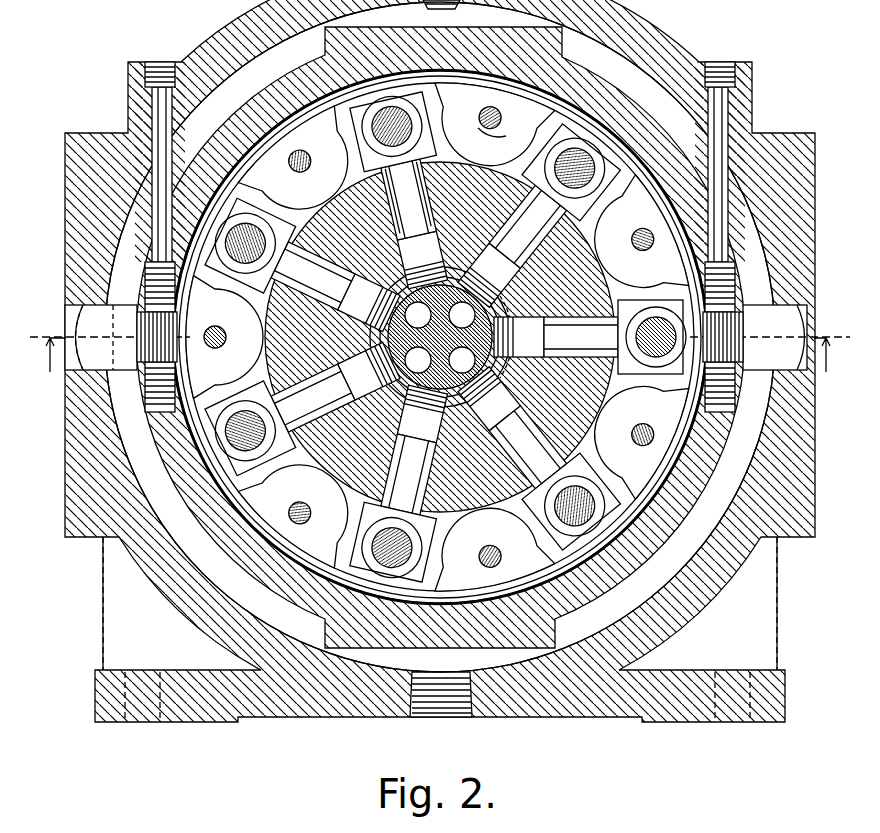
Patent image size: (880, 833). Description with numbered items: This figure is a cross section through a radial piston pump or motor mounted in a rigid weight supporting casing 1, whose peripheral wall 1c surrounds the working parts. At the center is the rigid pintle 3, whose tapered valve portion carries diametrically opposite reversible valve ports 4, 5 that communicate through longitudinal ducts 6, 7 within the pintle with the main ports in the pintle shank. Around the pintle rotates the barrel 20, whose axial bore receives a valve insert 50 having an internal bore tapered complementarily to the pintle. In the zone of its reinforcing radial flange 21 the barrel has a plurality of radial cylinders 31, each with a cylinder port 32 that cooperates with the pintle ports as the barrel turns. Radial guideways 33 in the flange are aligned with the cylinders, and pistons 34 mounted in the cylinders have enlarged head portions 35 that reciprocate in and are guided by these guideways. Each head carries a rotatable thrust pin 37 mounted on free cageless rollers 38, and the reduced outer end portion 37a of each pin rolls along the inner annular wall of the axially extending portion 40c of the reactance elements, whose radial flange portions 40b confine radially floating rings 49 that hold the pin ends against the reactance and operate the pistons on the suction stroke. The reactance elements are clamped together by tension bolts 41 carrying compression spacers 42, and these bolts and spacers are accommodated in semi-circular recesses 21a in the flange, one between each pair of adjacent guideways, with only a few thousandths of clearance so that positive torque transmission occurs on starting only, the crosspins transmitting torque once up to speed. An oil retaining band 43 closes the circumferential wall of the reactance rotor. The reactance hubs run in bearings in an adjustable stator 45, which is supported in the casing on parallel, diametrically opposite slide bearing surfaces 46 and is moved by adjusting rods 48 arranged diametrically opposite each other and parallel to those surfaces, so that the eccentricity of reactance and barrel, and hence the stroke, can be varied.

The peripheral wall 1c is at (648, 22).
The casing 1 is at (435, 360).
The pintle 3 is at (386, 318).
The reversible valve port 4 is at (378, 290).
The reversible valve port 5 is at (436, 392).
The longitudinal duct 6 is at (440, 315).
The longitudinal duct 7 is at (440, 360).
The barrel 20 is at (568, 272).
The reinforcing radial flange 21 is at (618, 284).
The semi-circular recess 21a is at (326, 492).
The radial cylinder 31 is at (441, 337).
The cylinder port 32 is at (499, 353).
The radial guideway 33 is at (432, 166).
The piston 34 is at (396, 210).
The enlarged head portion 35 is at (416, 160).
The thrust pin 37 is at (640, 318).
The reduced outer end portion 37a is at (560, 500).
The free cageless roller 38 is at (705, 314).
The radial flange portion 40b is at (318, 150).
The annular axially extending portion 40c is at (312, 118).
The tension bolt 41 is at (497, 136).
The compression spacer 42 is at (494, 118).
The oil retaining band 43 is at (694, 150).
The adjustable stator 45 is at (624, 100).
The slide bearing surface 46 is at (440, 337).
The adjusting rod 48 is at (82, 318).
The radially floating ring 49 is at (300, 176).
The valve insert 50 is at (302, 356).